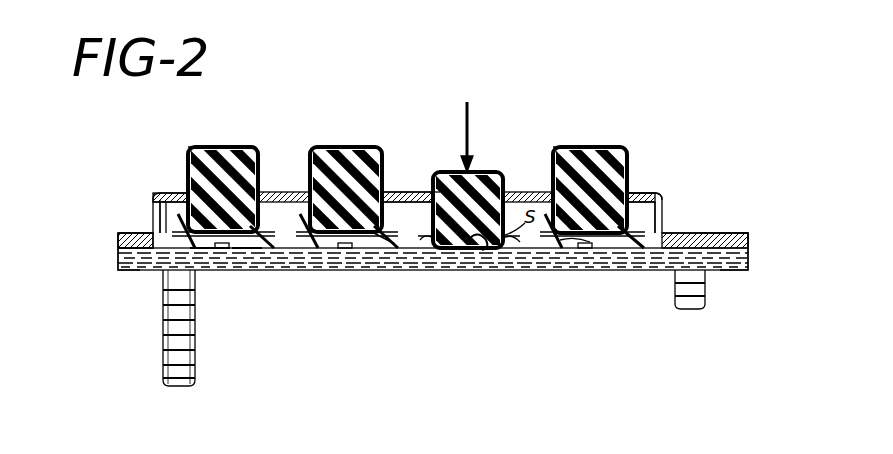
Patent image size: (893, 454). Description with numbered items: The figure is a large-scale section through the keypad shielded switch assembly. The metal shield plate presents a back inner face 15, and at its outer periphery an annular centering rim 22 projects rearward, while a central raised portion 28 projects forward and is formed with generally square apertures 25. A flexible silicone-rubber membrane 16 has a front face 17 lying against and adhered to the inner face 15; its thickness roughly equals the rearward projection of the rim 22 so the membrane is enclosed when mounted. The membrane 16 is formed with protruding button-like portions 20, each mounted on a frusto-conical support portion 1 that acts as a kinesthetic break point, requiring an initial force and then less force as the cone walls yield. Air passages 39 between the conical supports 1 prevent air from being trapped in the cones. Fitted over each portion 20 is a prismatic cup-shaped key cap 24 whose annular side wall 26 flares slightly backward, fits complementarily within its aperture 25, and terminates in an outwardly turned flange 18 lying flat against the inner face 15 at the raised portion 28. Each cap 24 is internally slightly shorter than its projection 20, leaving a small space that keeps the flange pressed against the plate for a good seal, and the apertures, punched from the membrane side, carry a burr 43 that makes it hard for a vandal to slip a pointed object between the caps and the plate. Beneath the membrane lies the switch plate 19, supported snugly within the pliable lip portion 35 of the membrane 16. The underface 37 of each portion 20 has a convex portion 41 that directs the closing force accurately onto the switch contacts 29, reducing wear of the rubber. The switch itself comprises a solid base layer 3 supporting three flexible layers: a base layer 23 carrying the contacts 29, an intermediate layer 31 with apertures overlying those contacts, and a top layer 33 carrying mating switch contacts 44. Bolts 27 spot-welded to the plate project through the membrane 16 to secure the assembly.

The conical support portion 1 is at (657, 240).
The base layer 3 is at (270, 272).
The back inner face 15 is at (157, 192).
The flexible silicone-rubber membrane 16 is at (120, 276).
The front face 17 is at (740, 237).
The outwardly turned flange 18 is at (398, 192).
The switch plate 19 is at (385, 240).
The button-like portion 20 is at (241, 147).
The annular centering rim 22 is at (118, 243).
The base layer 23 is at (338, 270).
The key cap 24 is at (186, 140).
The square aperture 25 is at (627, 150).
The annular side wall 26 is at (548, 175).
The bolt 27 is at (165, 342).
The raised portion 28 is at (652, 193).
The switch contact 29 is at (467, 273).
The intermediate layer 31 is at (258, 270).
The top layer 33 is at (238, 270).
The pliable lip portion 35 is at (745, 272).
The underface 37 is at (160, 212).
The air passage 39 is at (575, 270).
The convex portion 41 is at (318, 270).
The burr 43 is at (427, 172).
The switch contact 44 is at (482, 270).